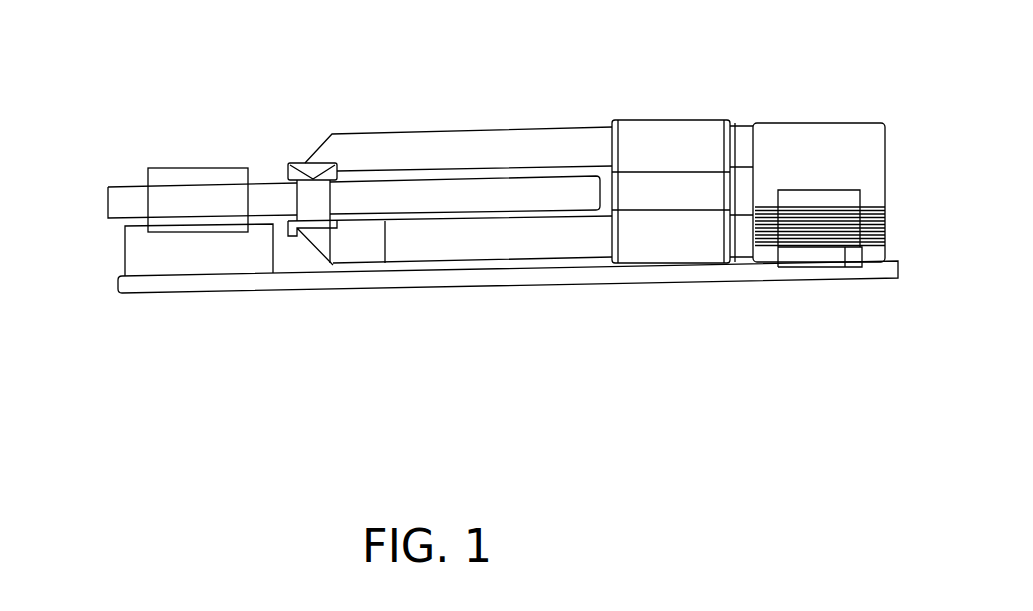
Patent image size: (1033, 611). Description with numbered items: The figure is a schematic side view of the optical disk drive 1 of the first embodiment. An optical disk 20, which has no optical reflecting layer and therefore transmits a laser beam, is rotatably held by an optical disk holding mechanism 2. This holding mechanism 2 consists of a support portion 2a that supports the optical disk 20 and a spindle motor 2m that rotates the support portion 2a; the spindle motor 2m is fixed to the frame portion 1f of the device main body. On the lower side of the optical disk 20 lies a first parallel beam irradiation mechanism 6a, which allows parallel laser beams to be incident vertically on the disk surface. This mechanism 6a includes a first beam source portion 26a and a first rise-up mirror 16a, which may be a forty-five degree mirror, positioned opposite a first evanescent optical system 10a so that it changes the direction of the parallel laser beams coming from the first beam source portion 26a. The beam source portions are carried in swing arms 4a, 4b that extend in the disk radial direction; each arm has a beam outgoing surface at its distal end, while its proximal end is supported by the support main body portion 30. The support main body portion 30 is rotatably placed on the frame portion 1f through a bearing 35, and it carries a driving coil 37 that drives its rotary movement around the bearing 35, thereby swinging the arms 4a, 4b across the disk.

The optical disk drive 1 is at (571, 204).
The frame portion 1f is at (225, 282).
The optical disk holding mechanism 2 is at (158, 222).
The support portion 2a is at (165, 173).
The spindle motor 2m is at (168, 265).
The swing arm 4a is at (467, 268).
The swing arm 4b is at (392, 142).
The first parallel beam irradiation mechanism 6a is at (538, 264).
The first evanescent optical system 10a is at (290, 160).
The first rise-up mirror 16a is at (313, 243).
The optical disk 20 is at (114, 206).
The first beam source portion 26a is at (382, 247).
The support main body portion 30 is at (819, 189).
The bearing 35 is at (655, 130).
The driving coil 37 is at (838, 247).